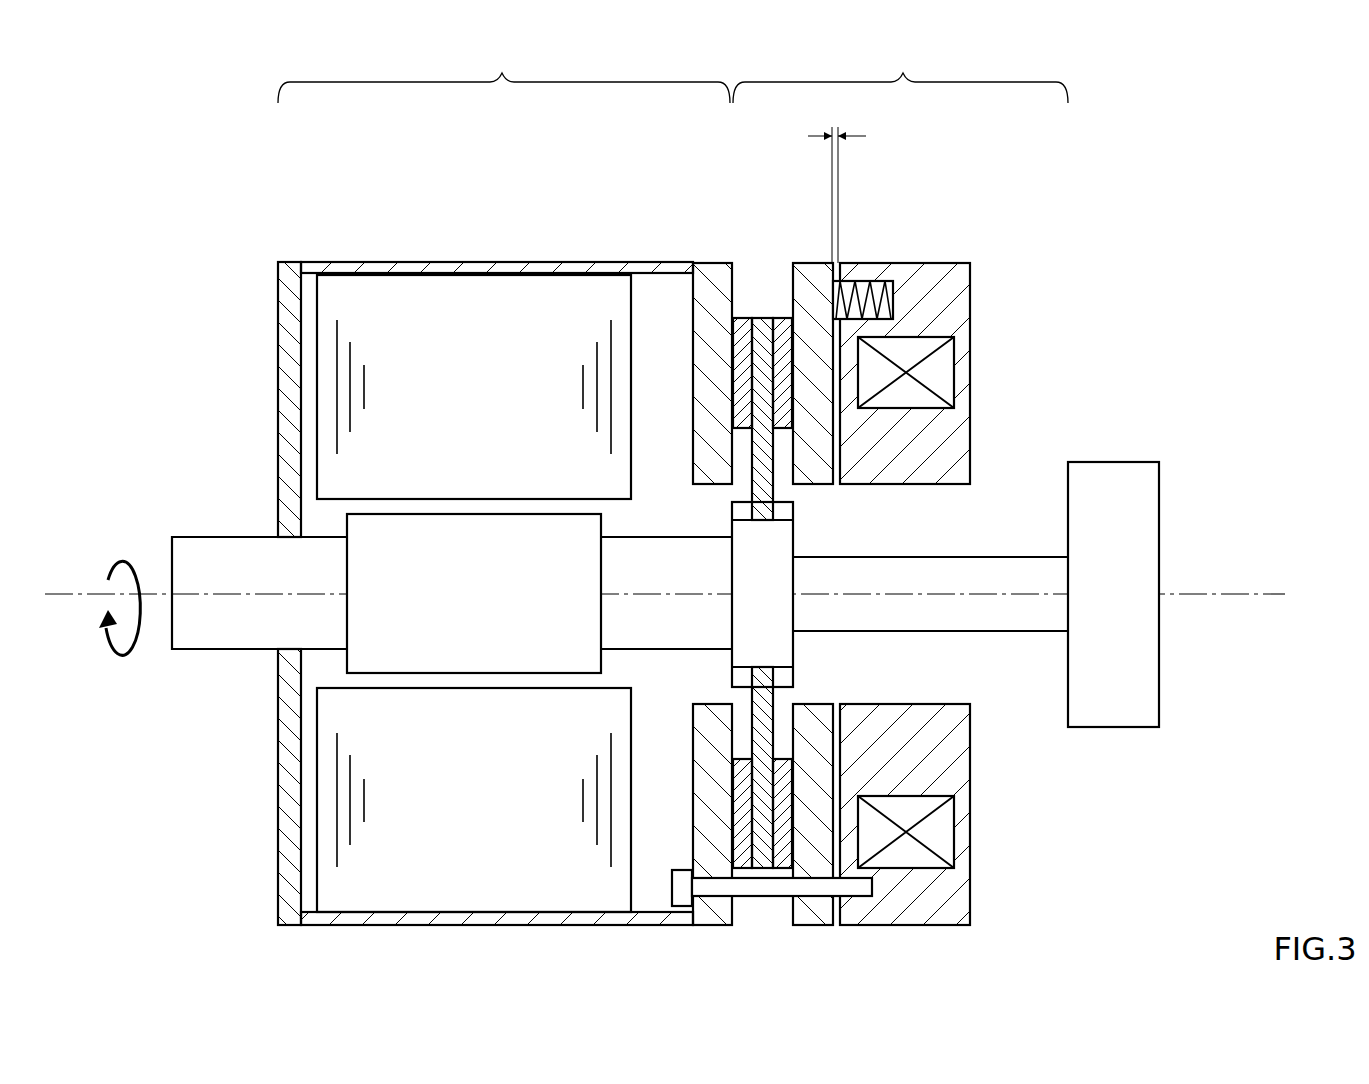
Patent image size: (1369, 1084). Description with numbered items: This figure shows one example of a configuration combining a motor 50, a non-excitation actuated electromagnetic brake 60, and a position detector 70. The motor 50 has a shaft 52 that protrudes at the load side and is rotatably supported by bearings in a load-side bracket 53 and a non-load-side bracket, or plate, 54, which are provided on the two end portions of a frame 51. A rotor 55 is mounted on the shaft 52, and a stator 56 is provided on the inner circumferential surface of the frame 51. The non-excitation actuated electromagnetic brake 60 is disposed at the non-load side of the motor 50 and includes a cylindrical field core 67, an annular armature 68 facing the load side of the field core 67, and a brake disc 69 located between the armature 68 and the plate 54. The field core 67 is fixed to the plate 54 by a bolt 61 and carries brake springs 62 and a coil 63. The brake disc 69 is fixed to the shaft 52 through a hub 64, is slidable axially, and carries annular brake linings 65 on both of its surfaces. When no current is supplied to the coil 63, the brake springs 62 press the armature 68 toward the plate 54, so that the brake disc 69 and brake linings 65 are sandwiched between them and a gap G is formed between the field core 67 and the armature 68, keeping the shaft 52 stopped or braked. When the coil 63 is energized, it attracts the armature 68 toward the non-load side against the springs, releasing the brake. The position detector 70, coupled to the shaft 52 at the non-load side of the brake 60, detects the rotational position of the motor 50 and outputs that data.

The motor 50 is at (504, 71).
The non-excitation actuated electromagnetic brake 60 is at (900, 71).
The gap G is at (838, 122).
The frame 51 is at (481, 262).
The shaft 52 is at (201, 537).
The load-side bracket 53 is at (279, 378).
The non-load-side bracket 54 is at (700, 263).
The rotor 55 is at (347, 522).
The stator 56 is at (317, 329).
The bolt 61 is at (685, 877).
The brake spring 62 is at (893, 296).
The coil 63 is at (947, 360).
The hub 64 is at (745, 533).
The brake lining 65 is at (783, 318).
The field core 67 is at (922, 263).
The armature 68 is at (813, 263).
The brake disc 69 is at (738, 366).
The position detector 70 is at (1115, 460).